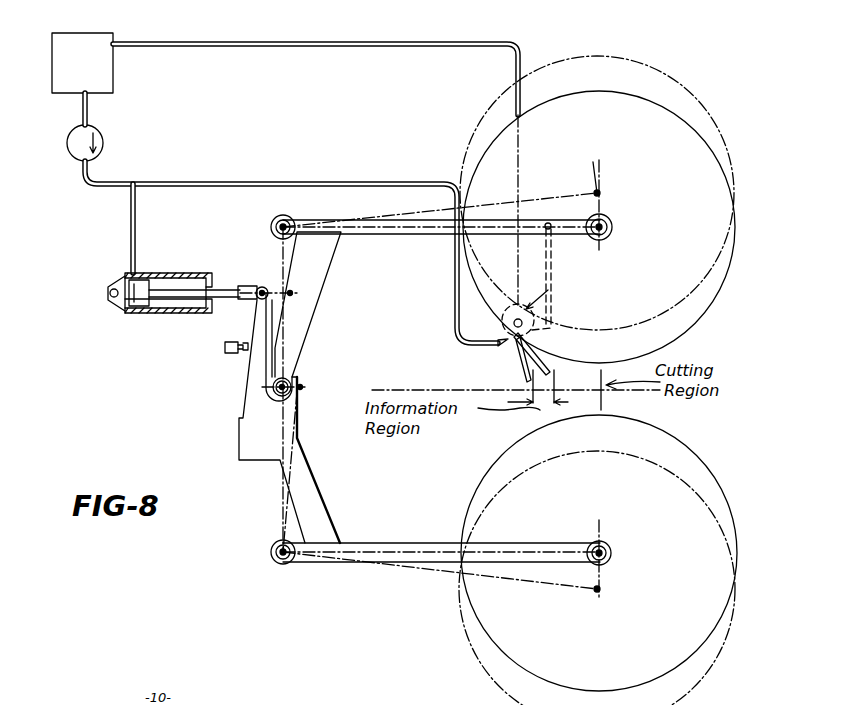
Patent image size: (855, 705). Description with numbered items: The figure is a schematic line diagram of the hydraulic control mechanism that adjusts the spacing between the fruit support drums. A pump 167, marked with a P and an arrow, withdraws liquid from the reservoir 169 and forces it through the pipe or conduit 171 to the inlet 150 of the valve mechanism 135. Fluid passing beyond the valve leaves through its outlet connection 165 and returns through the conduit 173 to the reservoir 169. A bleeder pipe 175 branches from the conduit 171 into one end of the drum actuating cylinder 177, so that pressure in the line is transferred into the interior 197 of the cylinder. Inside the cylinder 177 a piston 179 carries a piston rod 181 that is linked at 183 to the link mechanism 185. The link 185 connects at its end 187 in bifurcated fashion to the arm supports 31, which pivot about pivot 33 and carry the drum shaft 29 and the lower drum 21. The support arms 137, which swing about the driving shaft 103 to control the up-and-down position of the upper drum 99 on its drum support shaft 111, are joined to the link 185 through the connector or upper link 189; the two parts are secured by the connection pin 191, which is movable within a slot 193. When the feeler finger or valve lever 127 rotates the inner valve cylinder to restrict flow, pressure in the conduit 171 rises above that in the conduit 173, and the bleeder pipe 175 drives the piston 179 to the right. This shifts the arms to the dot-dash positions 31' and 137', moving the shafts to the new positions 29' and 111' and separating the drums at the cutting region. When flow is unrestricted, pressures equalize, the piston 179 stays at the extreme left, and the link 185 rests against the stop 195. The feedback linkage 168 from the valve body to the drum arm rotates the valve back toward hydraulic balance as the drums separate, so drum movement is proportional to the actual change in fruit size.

The reservoir 169 is at (84, 36).
The pump 167 is at (68, 138).
The pipe or conduit 171 is at (93, 180).
The conduit or pipe 173 is at (430, 36).
The bleeder pipe or conduit 175 is at (138, 224).
The drum actuating cylinder 177 is at (175, 264).
The piston 179 is at (150, 312).
The piston rod 181 is at (180, 290).
The link connection 183 is at (255, 304).
The interior of the cylinder 197 is at (128, 315).
The stop 195 is at (225, 356).
The link mechanism 185 is at (240, 386).
The driving shaft 103 is at (296, 207).
The support arms 137 is at (441, 242).
The shifted position of support arms 137' is at (440, 209).
The connector or upper link 189 is at (322, 277).
The connection pin 191 is at (290, 395).
The slot 193 is at (290, 380).
The end of link 187 is at (322, 504).
The arm supports 31 is at (441, 539).
The shifted position of arm supports 31' is at (440, 578).
The pivot 33 is at (270, 558).
The drum shaft 29 is at (612, 556).
The new position of drum shaft 29' is at (578, 603).
The drum 21 is at (730, 510).
The upper drum 99 is at (726, 272).
The drum support shaft 111 is at (621, 205).
The new position of drum support shaft 111' is at (618, 173).
The outlet connection 165 is at (509, 278).
The valve mechanism 135 is at (548, 291).
The feedback linkage 168 is at (552, 268).
The inlet 150 is at (499, 345).
The feeler finger or valve lever 127 is at (546, 362).